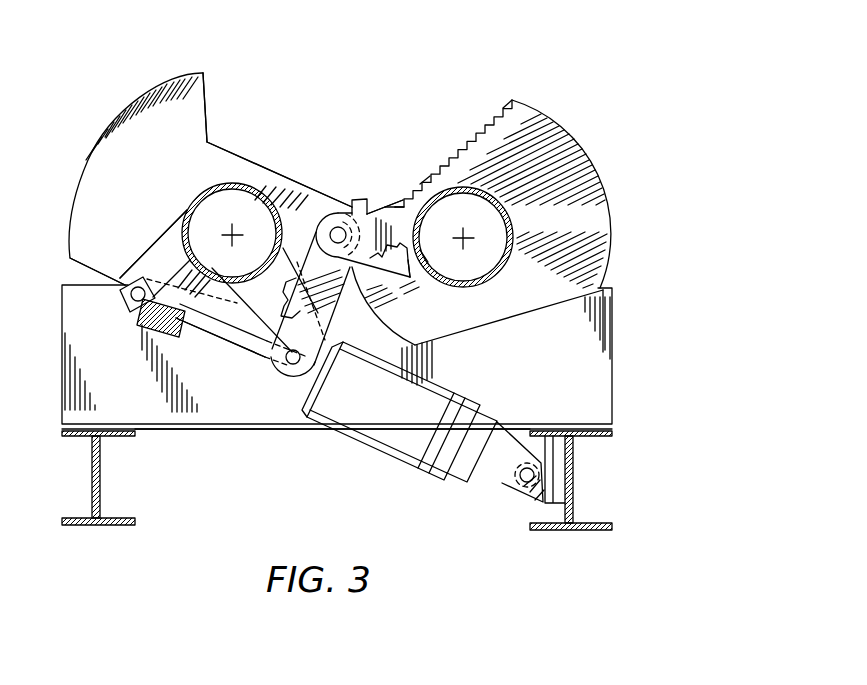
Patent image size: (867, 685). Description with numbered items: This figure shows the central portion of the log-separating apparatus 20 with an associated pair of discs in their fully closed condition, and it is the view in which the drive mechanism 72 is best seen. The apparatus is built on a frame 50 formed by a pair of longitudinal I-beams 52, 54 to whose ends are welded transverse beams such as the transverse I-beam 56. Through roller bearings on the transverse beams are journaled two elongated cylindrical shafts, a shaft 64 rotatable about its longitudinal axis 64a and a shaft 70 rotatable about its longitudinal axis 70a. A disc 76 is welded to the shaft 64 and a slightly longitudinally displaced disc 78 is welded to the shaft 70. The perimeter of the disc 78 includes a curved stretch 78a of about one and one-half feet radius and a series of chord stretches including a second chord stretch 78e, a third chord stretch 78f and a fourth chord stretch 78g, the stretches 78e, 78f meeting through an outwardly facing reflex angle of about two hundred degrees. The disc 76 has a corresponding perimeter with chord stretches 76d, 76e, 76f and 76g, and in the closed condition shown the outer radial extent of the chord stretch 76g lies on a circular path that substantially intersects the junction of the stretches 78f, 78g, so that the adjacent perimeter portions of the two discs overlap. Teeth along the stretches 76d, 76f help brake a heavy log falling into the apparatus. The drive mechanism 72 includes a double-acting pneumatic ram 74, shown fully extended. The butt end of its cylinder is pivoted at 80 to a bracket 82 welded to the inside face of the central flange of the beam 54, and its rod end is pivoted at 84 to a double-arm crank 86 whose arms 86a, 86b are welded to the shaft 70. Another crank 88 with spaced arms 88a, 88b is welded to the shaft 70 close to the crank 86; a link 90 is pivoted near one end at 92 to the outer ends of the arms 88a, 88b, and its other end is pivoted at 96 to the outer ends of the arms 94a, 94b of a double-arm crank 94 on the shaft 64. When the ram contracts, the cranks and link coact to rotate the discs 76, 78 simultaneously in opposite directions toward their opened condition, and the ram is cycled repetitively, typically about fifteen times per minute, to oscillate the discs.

The apparatus 20 is at (424, 62).
The frame 50 is at (622, 364).
The longitudinal I-beam 52 is at (92, 466).
The longitudinal I-beam 54 is at (575, 482).
The transverse I-beam 56 is at (154, 395).
The shaft 64 is at (500, 198).
The longitudinal axis of shaft 64 64a is at (513, 216).
The shaft 70 is at (205, 192).
The longitudinal axis of shaft 70 70a is at (232, 236).
The drive mechanism 72 is at (452, 370).
The double-acting pneumatic ram 74 is at (407, 424).
The disc 76 is at (580, 130).
The chord stretch 76d is at (495, 103).
The tooth surface of jaw 76 76e is at (425, 178).
The chord stretch 76f is at (397, 203).
The chord stretch 76g is at (381, 205).
The disc 78 is at (138, 84).
The curved stretch 78a is at (208, 92).
The second chord stretch 78e is at (258, 165).
The third chord stretch 78f is at (352, 200).
The fourth chord stretch 78g is at (370, 210).
The pivot 80 is at (522, 483).
The bracket 82 is at (562, 460).
The pivot 84 is at (136, 301).
The double-arm crank 86 is at (158, 206).
The arm 86a is at (160, 247).
The arm 86b is at (137, 272).
The crank 88 is at (272, 374).
The arm 88a is at (283, 302).
The arm 88b is at (258, 330).
The link 90 is at (333, 302).
The pivot 92 is at (292, 366).
The double-arm crank 94 is at (400, 230).
The arm 94a is at (397, 278).
The arm 94b is at (428, 248).
The pivot 96 is at (330, 225).